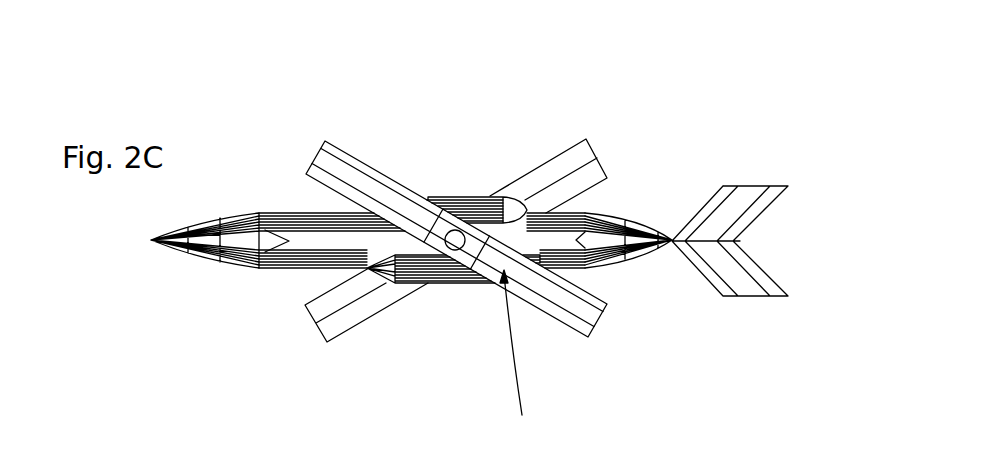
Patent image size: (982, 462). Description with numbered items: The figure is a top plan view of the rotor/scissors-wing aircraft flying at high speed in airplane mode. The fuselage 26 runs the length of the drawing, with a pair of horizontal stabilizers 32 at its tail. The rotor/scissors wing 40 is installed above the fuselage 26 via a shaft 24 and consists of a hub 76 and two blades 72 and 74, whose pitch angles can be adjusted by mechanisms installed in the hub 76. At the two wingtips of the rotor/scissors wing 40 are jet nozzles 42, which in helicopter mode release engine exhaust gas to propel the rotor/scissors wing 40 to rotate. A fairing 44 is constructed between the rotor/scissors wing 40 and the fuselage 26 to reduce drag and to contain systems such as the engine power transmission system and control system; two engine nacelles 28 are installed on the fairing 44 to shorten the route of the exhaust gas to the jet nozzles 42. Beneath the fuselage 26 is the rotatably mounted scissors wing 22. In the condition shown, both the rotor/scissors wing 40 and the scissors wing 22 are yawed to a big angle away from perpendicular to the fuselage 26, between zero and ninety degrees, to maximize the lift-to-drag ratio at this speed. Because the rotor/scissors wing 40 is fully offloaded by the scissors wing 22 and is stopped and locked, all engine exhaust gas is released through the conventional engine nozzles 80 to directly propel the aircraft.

The scissors wing 22 is at (347, 305).
The shaft 24 is at (456, 250).
The fuselage 26 is at (278, 224).
The engine nacelle 28 is at (470, 200).
The horizontal stabilizer 32 is at (745, 282).
The rotor/scissors wing 40 is at (522, 357).
The jet nozzle 42 is at (454, 240).
The fairing 44 is at (307, 242).
The blade 72 is at (392, 200).
The blade 74 is at (521, 288).
The hub 76 is at (452, 229).
The conventional engine nozzle 80 is at (508, 198).